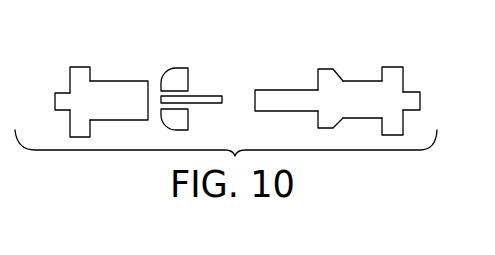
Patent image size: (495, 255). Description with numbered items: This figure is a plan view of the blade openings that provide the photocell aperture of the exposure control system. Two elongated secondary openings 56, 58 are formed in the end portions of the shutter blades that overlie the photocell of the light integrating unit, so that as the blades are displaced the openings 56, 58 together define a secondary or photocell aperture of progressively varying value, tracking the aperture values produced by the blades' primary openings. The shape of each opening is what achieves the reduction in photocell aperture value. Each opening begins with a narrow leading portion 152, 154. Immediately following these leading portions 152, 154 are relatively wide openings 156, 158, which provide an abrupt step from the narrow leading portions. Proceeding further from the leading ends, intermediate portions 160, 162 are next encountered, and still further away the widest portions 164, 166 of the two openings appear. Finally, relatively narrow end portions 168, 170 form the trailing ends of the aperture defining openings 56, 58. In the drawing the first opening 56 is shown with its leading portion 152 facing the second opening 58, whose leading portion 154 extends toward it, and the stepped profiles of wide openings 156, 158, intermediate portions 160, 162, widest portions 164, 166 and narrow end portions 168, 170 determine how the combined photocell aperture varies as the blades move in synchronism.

The opening 56 is at (86, 56).
The opening 58 is at (364, 73).
The leading portion 152 is at (210, 96).
The leading portion 154 is at (285, 90).
The relatively wide opening 156 is at (175, 69).
The relatively wide opening 158 is at (320, 68).
The intermediate portion 160 is at (108, 81).
The intermediate portion 162 is at (347, 80).
The widest portion 164 is at (77, 66).
The widest portion 166 is at (394, 67).
The narrow end portion 168 is at (56, 94).
The narrow end portion 170 is at (412, 90).